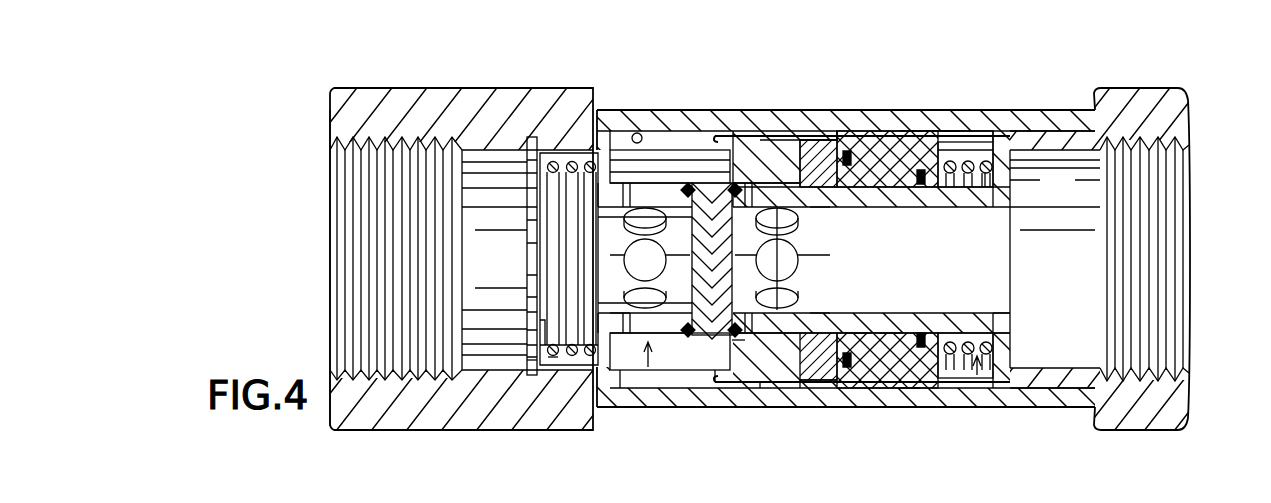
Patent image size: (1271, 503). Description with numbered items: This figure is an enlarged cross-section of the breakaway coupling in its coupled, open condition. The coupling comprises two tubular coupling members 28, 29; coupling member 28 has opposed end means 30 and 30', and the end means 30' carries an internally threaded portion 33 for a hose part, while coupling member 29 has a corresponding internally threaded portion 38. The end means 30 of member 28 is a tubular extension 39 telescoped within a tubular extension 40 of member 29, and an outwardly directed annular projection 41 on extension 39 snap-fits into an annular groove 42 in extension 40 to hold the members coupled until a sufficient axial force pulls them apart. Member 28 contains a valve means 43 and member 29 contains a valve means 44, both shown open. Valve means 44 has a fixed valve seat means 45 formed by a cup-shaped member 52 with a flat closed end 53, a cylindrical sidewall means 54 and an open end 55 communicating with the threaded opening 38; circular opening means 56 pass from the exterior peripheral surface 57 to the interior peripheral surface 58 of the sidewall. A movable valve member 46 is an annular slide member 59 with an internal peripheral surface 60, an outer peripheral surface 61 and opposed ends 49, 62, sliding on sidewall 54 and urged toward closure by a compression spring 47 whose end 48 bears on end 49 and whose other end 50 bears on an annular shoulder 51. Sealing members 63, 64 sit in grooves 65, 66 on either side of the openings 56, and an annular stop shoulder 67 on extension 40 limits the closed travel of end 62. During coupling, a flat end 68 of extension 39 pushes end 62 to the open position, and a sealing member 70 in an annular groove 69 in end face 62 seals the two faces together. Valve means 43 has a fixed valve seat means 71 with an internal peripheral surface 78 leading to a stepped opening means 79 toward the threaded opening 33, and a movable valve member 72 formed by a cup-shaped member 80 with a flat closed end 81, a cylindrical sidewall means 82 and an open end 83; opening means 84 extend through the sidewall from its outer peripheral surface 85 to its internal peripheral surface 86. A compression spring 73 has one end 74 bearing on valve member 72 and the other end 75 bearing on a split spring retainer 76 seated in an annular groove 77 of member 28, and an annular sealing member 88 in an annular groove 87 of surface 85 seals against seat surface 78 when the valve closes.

The coupling member 28 is at (448, 88).
The coupling member 29 is at (1150, 88).
The end means 30 is at (841, 84).
The end means 30' is at (289, 258).
The internally threaded portion 33 is at (345, 148).
The internally threaded portion 38 is at (1170, 150).
The tubular extension 39 is at (780, 140).
The tubular extension 40 is at (795, 108).
The annular projection 41 is at (642, 150).
The annular groove 42 is at (627, 130).
The valve means 43 is at (640, 380).
The valve means 44 is at (978, 376).
The fixed valve seat means 45 is at (900, 200).
The movable valve member 46 is at (925, 131).
The compression spring 47 is at (962, 358).
The end of compression spring 48 is at (990, 150).
The end of valve member 49 is at (955, 140).
The end of compression spring 50 is at (1020, 170).
The annular shoulder 51 is at (986, 160).
The cup-shaped member 52 is at (790, 360).
The closed end 53 is at (715, 372).
The sidewall means 54 is at (880, 160).
The open end 55 is at (1000, 330).
The circular opening means 56 is at (798, 262).
The exterior peripheral surface 57 is at (895, 345).
The interior peripheral surface 58 is at (985, 320).
The slide member 59 is at (875, 388).
The internal peripheral surface 60 is at (850, 333).
The outer peripheral surface 61 is at (910, 388).
The end of slide member 62 is at (815, 385).
The annular sealing member 63 is at (921, 184).
The annular sealing member 64 is at (740, 150).
The annular groove 65 is at (920, 348).
The annular groove 66 is at (735, 183).
The annular stop shoulder 67 is at (735, 342).
The flat end 68 is at (845, 388).
The annular groove 69 is at (860, 131).
The annular sealing member 70 is at (843, 150).
The fixed valve seat means 71 is at (770, 385).
The movable valve member 72 is at (650, 380).
The compression spring 73 is at (555, 345).
The end of compression spring 74 is at (580, 153).
The end of compression spring 75 is at (555, 358).
The split spring retainer 76 is at (530, 365).
The annular groove 77 is at (532, 137).
The internal peripheral surface 78 is at (820, 195).
The stepped opening means 79 is at (760, 390).
The cup-shaped member 80 is at (620, 375).
The closed end 81 is at (735, 320).
The sidewall means 82 is at (640, 133).
The open end 83 is at (575, 330).
The opening means 84 is at (600, 257).
The outer peripheral surface 85 is at (688, 338).
The internal peripheral surface 86 is at (615, 312).
The annular groove 87 is at (690, 322).
The annular sealing member 88 is at (688, 183).